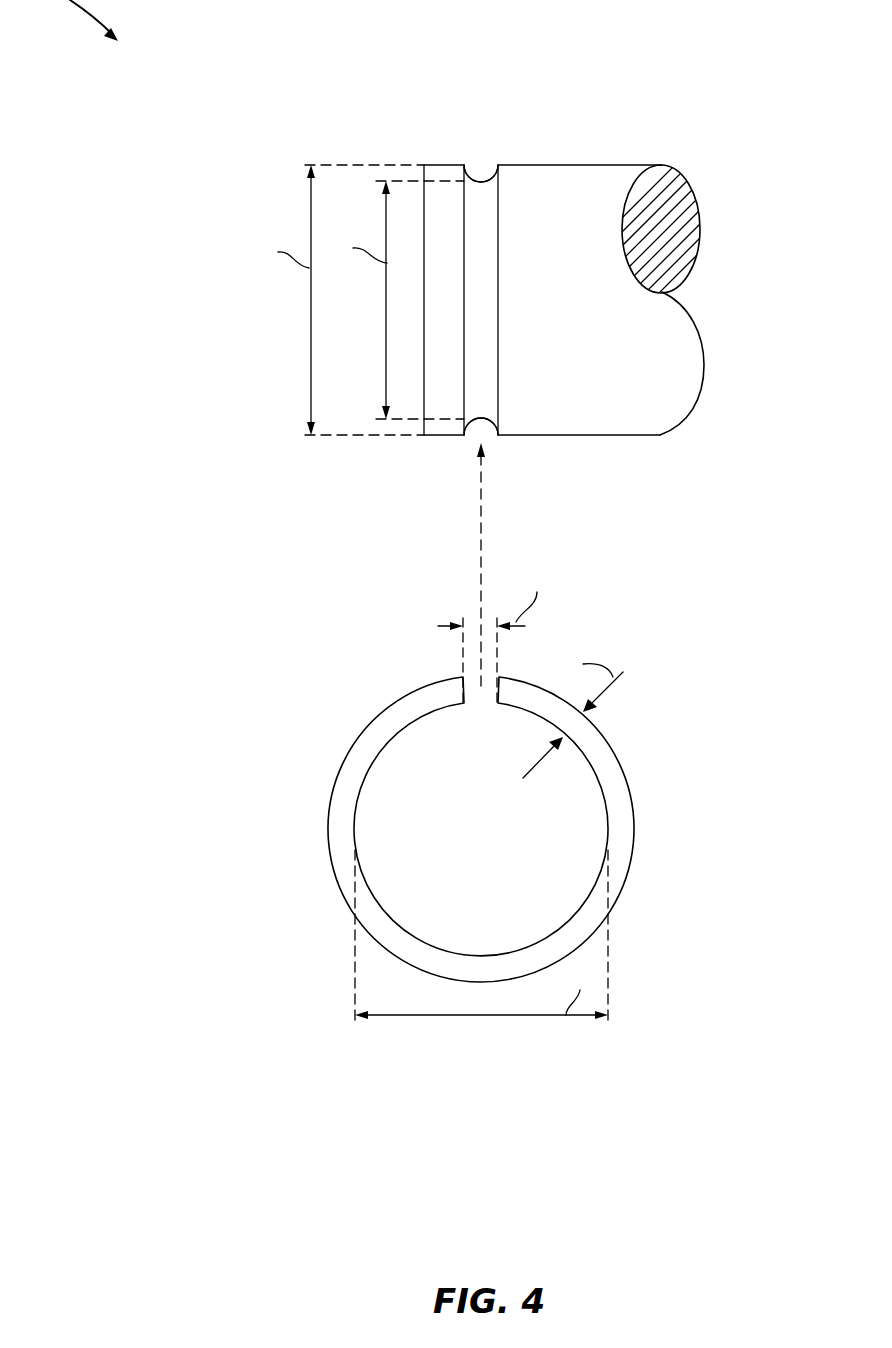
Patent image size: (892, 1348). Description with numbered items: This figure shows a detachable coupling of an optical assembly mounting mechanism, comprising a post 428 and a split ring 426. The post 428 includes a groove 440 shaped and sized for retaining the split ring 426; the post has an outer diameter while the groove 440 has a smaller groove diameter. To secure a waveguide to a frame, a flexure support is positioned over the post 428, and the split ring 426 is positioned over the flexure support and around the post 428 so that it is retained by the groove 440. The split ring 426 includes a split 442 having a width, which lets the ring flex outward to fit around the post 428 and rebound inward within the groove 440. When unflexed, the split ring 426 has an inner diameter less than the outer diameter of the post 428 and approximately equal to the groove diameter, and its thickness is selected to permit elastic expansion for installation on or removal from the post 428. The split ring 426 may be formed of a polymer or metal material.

The post 428 is at (596, 130).
The groove 440 is at (480, 161).
The split ring 426 is at (597, 607).
The split 442 is at (481, 718).